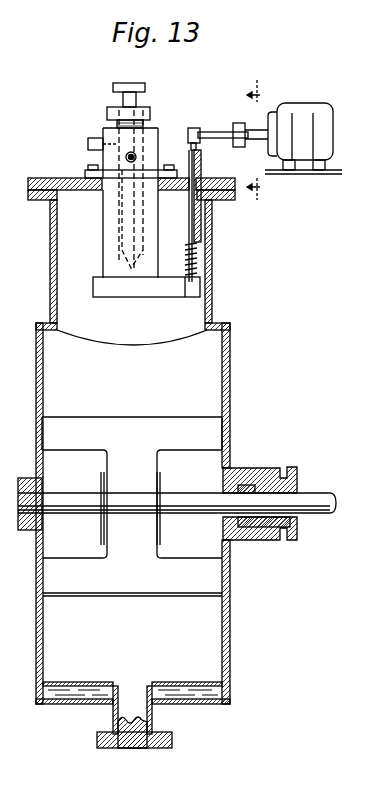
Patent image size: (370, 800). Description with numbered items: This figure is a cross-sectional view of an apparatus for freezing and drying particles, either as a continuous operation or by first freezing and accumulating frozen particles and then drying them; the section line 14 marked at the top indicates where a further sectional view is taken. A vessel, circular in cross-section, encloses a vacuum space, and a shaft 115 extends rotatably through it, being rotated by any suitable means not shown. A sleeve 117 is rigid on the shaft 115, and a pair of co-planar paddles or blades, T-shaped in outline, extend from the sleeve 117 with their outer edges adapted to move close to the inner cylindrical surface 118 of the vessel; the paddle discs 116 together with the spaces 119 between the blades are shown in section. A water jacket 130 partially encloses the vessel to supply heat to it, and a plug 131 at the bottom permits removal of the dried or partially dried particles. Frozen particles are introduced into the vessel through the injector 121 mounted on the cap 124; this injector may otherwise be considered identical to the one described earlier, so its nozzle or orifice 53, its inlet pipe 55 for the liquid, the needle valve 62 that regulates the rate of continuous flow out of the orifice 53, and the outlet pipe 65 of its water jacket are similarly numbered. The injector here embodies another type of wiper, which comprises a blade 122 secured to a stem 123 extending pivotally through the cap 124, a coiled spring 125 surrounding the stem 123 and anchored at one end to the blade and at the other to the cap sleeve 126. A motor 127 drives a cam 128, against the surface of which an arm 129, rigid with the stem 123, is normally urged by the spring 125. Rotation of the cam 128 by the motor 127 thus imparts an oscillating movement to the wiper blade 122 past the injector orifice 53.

The section line 14 is at (244, 142).
The nozzle 53 is at (138, 265).
The inlet pipe 55 is at (92, 140).
The needle valve 62 is at (123, 100).
The outlet pipe 65 is at (134, 153).
The shaft 115 is at (90, 512).
The rotor disc 116 is at (142, 423).
The sleeve 117 is at (112, 484).
The inner cylindrical surface 118 is at (217, 376).
The spaces 119 is at (63, 458).
The injector 121 is at (103, 259).
The wiper blade 122 is at (158, 290).
The stem 123 is at (198, 251).
The cap 124 is at (52, 186).
The coiled spring 125 is at (197, 269).
The cap sleeve 126 is at (205, 226).
The motor 127 is at (312, 105).
The cam 128 is at (237, 122).
The arm 129 is at (228, 140).
The water jacket 130 is at (216, 703).
The plug 131 is at (140, 749).